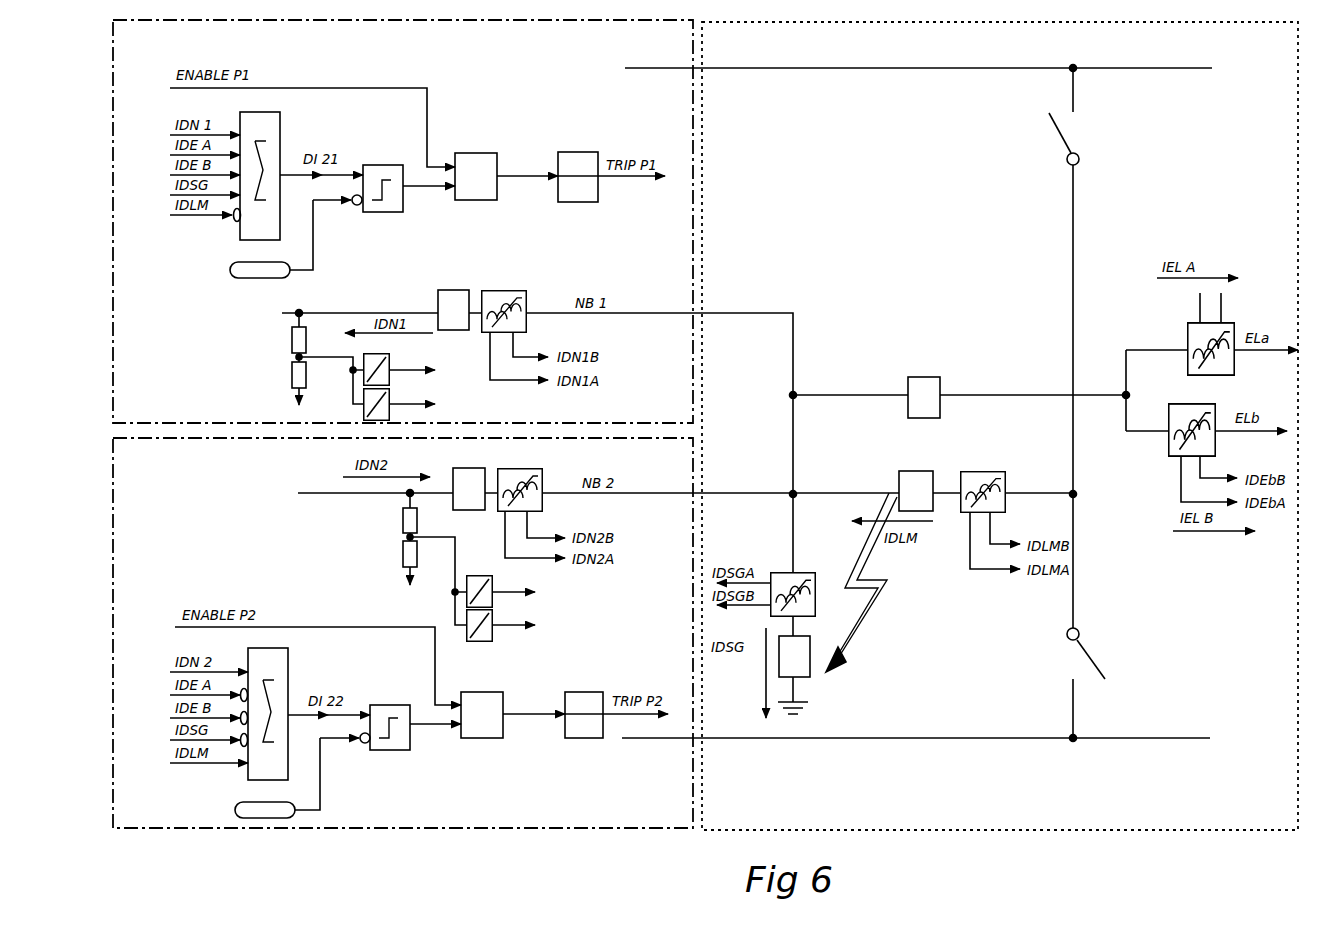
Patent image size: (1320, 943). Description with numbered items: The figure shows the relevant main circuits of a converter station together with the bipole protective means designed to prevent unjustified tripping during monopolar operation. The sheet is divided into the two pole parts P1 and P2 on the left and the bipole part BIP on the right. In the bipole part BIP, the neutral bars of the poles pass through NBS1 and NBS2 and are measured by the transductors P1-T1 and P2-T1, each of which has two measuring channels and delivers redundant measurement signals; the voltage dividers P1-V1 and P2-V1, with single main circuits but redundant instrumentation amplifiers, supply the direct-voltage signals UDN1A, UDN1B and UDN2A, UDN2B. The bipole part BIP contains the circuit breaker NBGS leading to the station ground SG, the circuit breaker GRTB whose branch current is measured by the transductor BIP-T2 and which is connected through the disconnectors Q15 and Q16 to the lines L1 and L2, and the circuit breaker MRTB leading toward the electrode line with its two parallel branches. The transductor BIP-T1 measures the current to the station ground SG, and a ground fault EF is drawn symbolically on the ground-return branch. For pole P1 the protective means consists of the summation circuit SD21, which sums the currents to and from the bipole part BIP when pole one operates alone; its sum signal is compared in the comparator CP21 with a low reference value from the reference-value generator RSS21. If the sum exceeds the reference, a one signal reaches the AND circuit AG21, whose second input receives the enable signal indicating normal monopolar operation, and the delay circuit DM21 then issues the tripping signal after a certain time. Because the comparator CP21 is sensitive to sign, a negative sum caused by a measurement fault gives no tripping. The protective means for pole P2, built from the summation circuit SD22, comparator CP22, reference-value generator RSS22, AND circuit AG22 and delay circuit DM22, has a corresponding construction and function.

The pole part P1 is at (403, 221).
The pole part P2 is at (403, 633).
The bipole part BIP is at (1000, 426).
The line L1 is at (918, 54).
The line L2 is at (916, 756).
The disconnector Q15 is at (1070, 139).
The disconnector Q16 is at (1079, 653).
The circuit breaker MRTB is at (961, 387).
The circuit breaker GRTB is at (913, 481).
The measuring transductor BIP-T1 is at (787, 595).
The measuring transductor BIP-T2 is at (988, 510).
The circuit breaker NBGS is at (815, 659).
The station ground SG is at (804, 709).
The ground fault EF is at (875, 608).
The summation circuit SD21 is at (283, 116).
The comparator CP21 is at (392, 212).
The AND circuit AG21 is at (476, 162).
The delay circuit DM21 is at (578, 162).
The reference-value generator RSS21 is at (232, 276).
The neutral bus switch NBS1 is at (454, 300).
The measuring transductor P1-T1 is at (515, 325).
The measuring voltage divider P1-V1 is at (318, 367).
The measurement signal UDN1A is at (404, 370).
The measurement signal UDN1B is at (404, 405).
The summation circuit SD22 is at (280, 660).
The comparator CP22 is at (398, 750).
The AND circuit AG22 is at (485, 738).
The delay circuit DM22 is at (586, 738).
The reference-value generator RSS22 is at (232, 814).
The neutral bus switch NBS2 is at (469, 479).
The measuring transductor P2-T1 is at (531, 503).
The measuring voltage divider P2-V1 is at (416, 548).
The measurement signal UDN2A is at (507, 591).
The measurement signal UDN2B is at (507, 625).